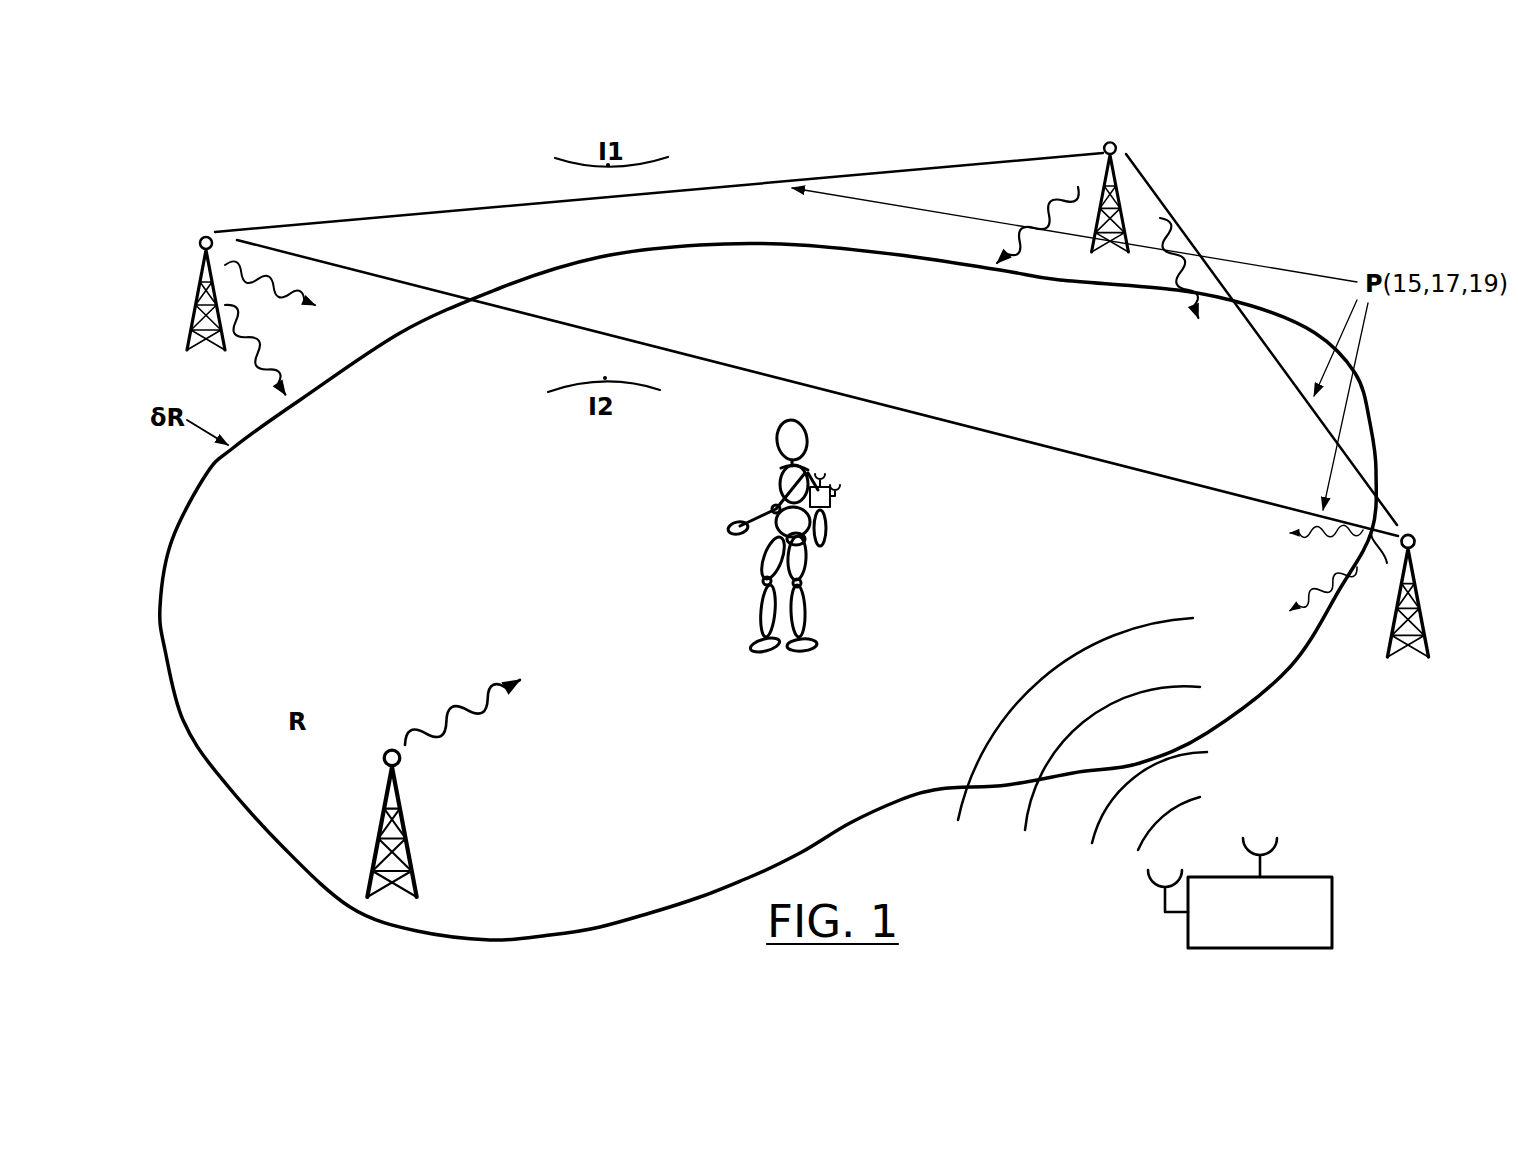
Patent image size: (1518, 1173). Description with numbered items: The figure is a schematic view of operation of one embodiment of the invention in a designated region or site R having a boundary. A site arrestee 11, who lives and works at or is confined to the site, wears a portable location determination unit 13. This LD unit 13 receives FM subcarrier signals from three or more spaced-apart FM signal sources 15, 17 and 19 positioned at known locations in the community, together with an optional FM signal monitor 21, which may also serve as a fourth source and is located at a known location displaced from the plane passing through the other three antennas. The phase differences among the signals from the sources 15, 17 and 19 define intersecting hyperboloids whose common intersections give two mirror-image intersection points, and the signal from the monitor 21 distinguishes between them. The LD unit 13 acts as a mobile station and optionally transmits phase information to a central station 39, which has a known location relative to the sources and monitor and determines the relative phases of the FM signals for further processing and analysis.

The site arrestee 11 is at (833, 452).
The portable location determination (LD) unit 13 is at (833, 510).
The FM signal source 15 is at (215, 232).
The FM signal source 17 is at (1118, 144).
The FM signal source 19 is at (1416, 538).
The FM signal monitor 21 is at (385, 750).
The central station 39 is at (1315, 897).